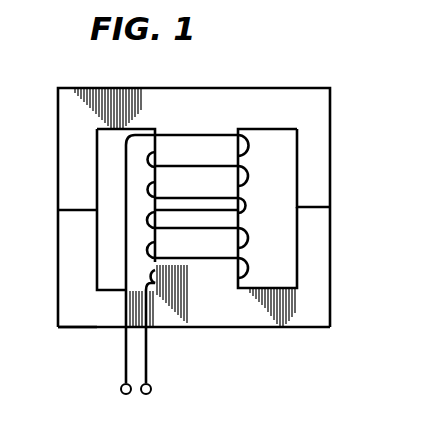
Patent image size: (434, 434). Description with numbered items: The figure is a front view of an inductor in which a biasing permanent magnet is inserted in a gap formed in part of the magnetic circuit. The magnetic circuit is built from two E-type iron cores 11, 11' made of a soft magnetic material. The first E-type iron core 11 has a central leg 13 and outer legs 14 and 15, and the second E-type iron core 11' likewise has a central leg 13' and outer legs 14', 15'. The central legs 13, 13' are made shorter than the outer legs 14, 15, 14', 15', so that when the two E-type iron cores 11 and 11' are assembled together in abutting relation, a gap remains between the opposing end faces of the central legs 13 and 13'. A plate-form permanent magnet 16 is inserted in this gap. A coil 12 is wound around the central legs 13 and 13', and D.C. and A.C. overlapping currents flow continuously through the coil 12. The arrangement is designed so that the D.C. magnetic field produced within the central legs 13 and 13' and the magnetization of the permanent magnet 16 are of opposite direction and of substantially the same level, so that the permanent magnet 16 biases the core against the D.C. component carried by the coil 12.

The E-type iron core 11 is at (194, 191).
The E-type iron core 11' is at (194, 317).
The coil 12 is at (150, 160).
The central leg 13 is at (219, 174).
The central leg 13' is at (223, 245).
The outer leg 14 is at (334, 168).
The outer leg 14' is at (312, 208).
The outer leg 15 is at (59, 195).
The outer leg 15' is at (55, 286).
The plate-form permanent magnet 16 is at (176, 203).